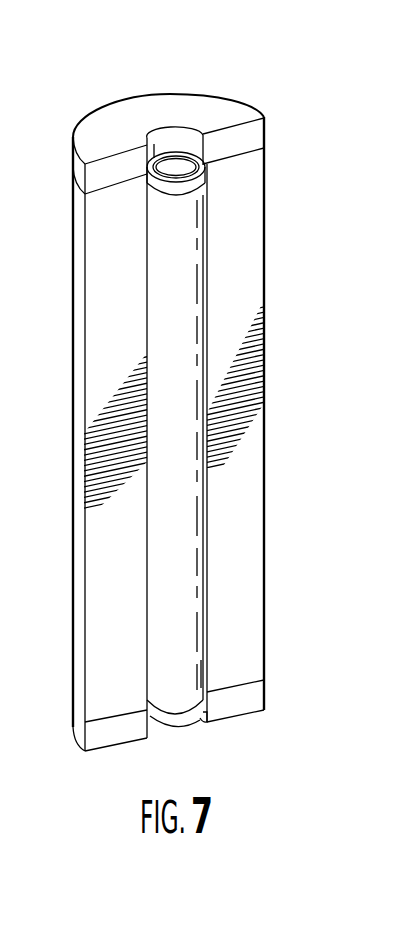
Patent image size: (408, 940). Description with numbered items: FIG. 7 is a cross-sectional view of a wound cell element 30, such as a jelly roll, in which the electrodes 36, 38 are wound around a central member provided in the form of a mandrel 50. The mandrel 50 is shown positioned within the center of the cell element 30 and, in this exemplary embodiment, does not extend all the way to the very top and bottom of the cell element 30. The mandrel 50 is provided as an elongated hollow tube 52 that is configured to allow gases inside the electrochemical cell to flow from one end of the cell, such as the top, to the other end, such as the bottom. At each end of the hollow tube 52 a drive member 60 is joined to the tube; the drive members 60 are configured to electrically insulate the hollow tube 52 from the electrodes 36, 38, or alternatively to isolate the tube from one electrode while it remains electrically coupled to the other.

The cell element 30 is at (186, 58).
The positive electrode 36 is at (109, 735).
The negative electrode 38 is at (99, 127).
The mandrel 50 is at (186, 476).
The hollow tube 52 is at (178, 618).
The drive member 60 is at (192, 184).